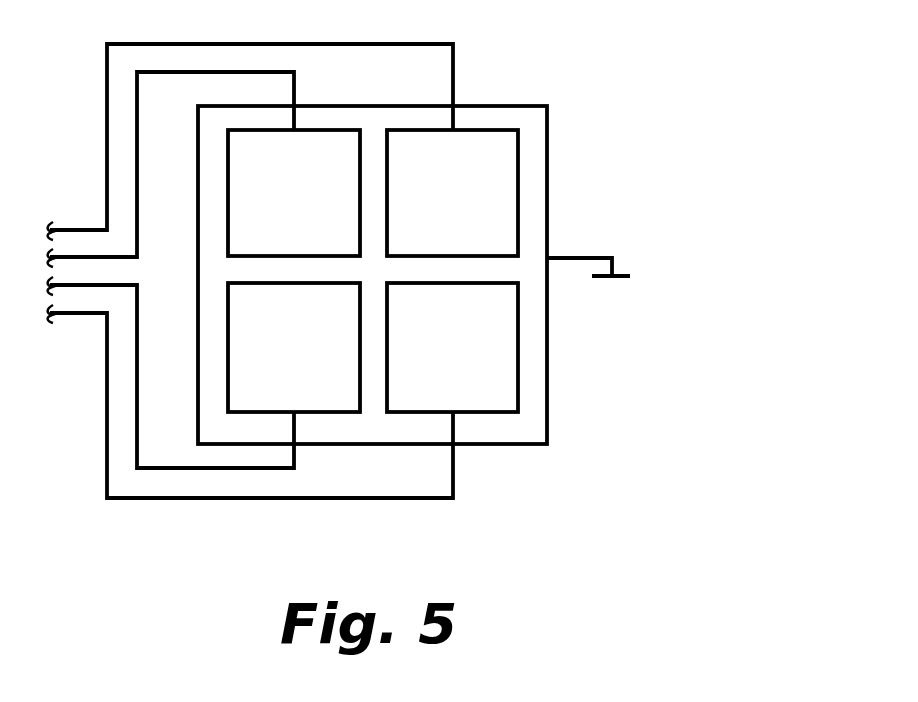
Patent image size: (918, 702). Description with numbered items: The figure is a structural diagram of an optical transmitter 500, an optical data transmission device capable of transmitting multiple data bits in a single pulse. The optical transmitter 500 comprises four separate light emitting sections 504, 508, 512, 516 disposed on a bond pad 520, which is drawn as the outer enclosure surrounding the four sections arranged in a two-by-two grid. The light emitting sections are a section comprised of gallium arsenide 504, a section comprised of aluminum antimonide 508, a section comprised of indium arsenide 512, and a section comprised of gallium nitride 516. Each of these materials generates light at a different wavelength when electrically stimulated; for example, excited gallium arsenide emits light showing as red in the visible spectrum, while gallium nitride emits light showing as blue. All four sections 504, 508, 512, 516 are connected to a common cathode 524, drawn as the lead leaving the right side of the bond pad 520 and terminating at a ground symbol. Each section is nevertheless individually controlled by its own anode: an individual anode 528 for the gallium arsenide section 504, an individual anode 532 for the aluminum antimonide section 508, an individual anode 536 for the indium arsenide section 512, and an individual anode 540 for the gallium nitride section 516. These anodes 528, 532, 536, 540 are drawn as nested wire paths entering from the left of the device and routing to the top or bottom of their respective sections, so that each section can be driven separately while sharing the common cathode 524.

The optical transmitter 500 is at (668, 102).
The gallium arsenide light emitting section 504 is at (346, 247).
The aluminum antimonide light emitting section 508 is at (504, 247).
The indium arsenide light emitting section 512 is at (346, 402).
The gallium nitride light emitting section 516 is at (504, 402).
The bond pad 520 is at (540, 414).
The common cathode 524 is at (598, 258).
The individual anode 528 is at (177, 74).
The individual anode 532 is at (453, 68).
The individual anode 536 is at (167, 468).
The individual anode 540 is at (453, 478).